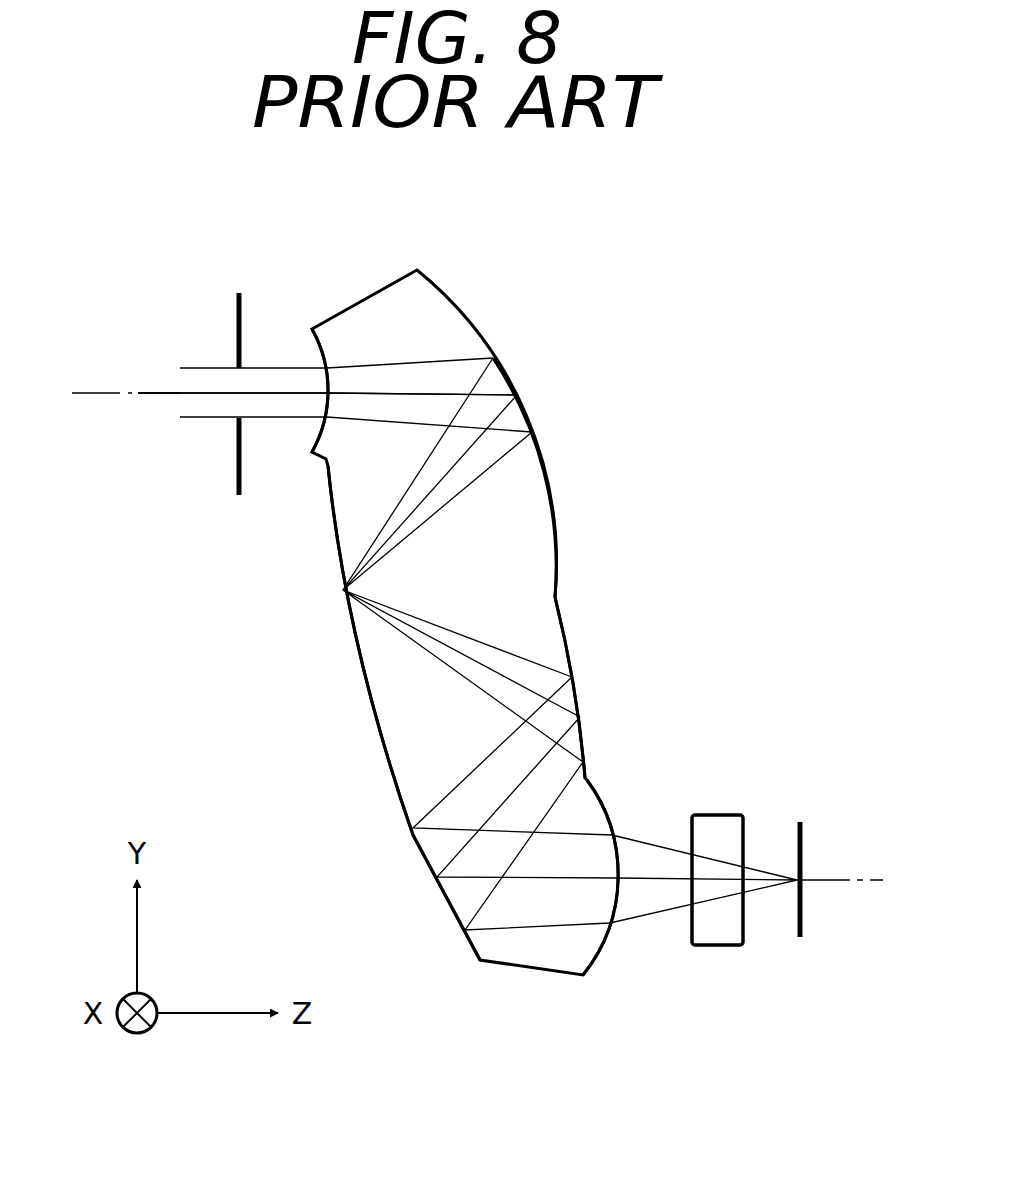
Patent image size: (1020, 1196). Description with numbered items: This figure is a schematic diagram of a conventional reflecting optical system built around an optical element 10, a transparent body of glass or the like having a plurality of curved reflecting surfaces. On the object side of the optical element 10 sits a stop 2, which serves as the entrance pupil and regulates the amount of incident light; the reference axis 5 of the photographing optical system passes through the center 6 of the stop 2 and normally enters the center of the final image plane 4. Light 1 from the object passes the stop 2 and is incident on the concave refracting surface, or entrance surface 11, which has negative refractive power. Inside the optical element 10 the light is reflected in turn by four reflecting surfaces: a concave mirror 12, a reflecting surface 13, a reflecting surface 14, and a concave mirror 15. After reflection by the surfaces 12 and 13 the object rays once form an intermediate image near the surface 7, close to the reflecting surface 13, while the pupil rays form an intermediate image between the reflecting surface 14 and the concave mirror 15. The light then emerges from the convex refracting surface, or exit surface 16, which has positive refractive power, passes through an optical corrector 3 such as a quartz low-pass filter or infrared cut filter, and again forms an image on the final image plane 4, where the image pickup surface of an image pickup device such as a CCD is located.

The light from the object 1 is at (205, 367).
The stop 2 is at (241, 305).
The optical corrector 3 is at (720, 818).
The final image plane 4 is at (803, 836).
The reference axis 5 is at (110, 394).
The center of the stop 6 is at (266, 392).
The surface near the intermediate image 7 is at (342, 594).
The optical element 10 is at (474, 332).
The concave refracting surface (entrance surface) 11 is at (328, 355).
The concave mirror 12 is at (549, 462).
The reflecting surface 13 is at (330, 545).
The reflecting surface 14 is at (571, 641).
The concave mirror 15 is at (418, 857).
The convex refracting surface (exit surface) 16 is at (604, 958).